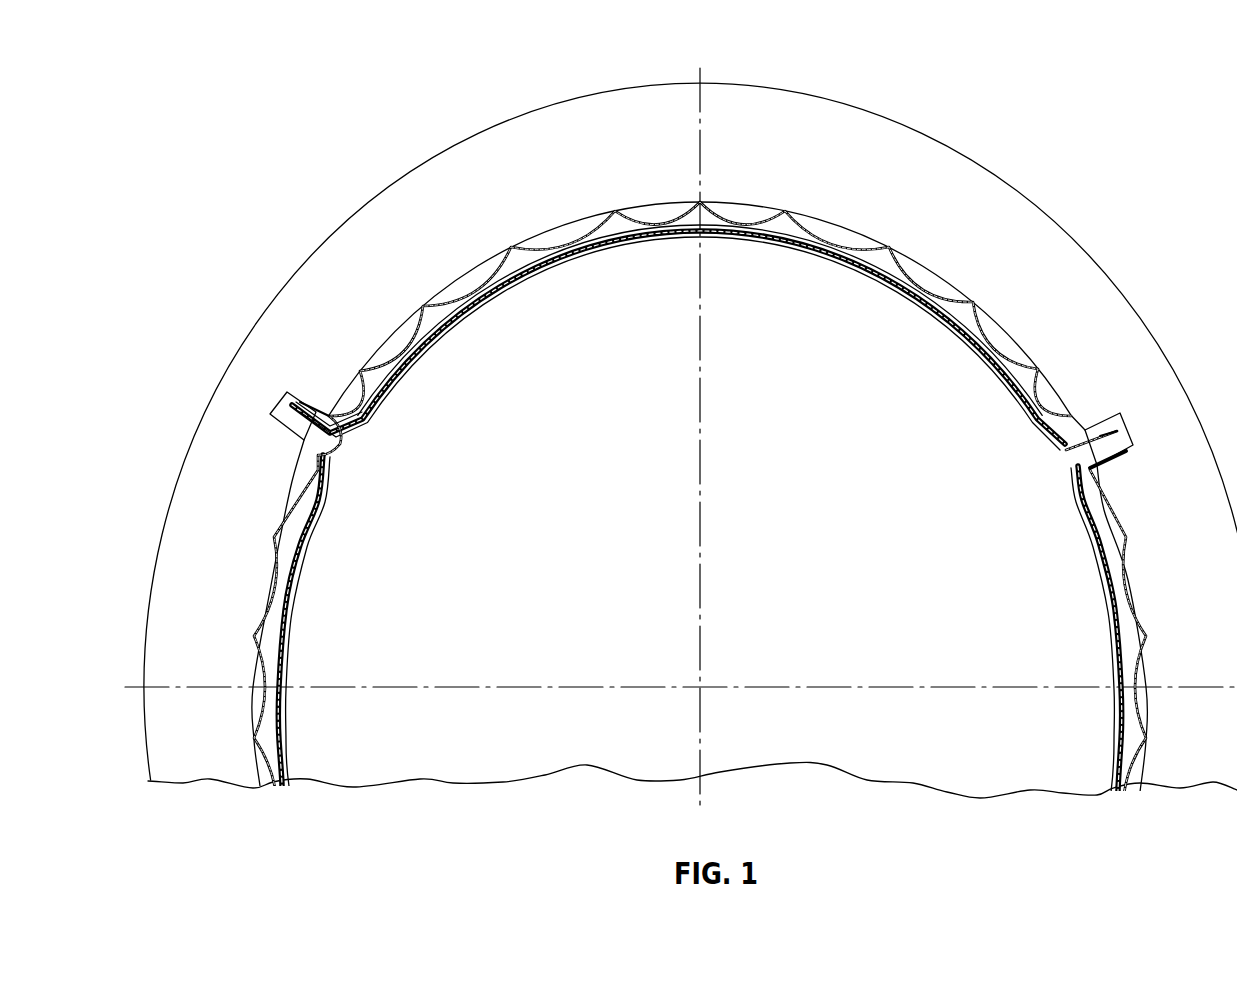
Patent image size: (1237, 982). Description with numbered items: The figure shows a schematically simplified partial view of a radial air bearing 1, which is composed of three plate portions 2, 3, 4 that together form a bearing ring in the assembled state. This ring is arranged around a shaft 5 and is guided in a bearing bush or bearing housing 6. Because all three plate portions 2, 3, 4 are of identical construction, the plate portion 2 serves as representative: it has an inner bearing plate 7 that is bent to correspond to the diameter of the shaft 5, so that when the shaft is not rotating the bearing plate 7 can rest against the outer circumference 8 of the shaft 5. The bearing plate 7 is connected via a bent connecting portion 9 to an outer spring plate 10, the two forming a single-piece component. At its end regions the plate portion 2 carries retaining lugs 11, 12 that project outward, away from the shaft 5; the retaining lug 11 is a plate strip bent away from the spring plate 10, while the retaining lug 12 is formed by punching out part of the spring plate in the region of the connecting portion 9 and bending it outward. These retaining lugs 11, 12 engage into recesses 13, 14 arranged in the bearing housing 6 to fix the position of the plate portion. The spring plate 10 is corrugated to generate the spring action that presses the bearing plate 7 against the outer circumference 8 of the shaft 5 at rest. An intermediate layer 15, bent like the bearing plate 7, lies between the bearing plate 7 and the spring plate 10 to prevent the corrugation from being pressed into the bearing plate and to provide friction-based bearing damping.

The radial air bearing 1 is at (350, 745).
The plate portion 2 is at (518, 285).
The plate portion 3 is at (295, 605).
The plate portion 4 is at (1093, 567).
The shaft 5 is at (653, 572).
The bearing housing 6 is at (1060, 223).
The inner bearing plate 7 is at (644, 237).
The outer circumference 8 is at (291, 412).
The connecting portion 9 is at (1085, 431).
The outer spring plate 10 is at (903, 266).
The retaining lug 11 is at (307, 417).
The retaining lug 12 is at (1108, 430).
The recess 13 is at (270, 416).
The recess 14 is at (1127, 423).
The intermediate layer 15 is at (787, 230).